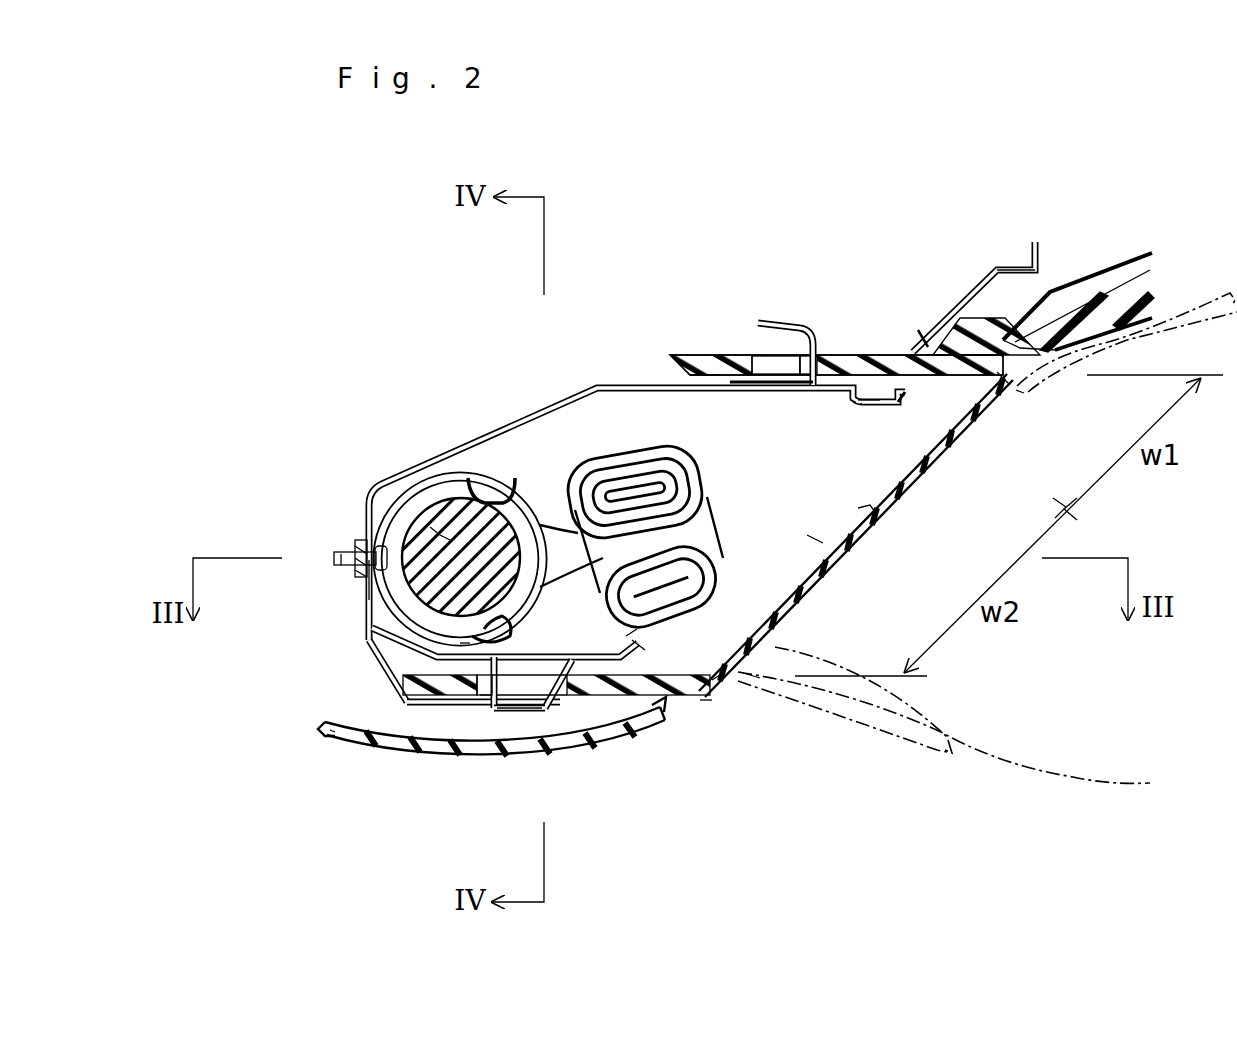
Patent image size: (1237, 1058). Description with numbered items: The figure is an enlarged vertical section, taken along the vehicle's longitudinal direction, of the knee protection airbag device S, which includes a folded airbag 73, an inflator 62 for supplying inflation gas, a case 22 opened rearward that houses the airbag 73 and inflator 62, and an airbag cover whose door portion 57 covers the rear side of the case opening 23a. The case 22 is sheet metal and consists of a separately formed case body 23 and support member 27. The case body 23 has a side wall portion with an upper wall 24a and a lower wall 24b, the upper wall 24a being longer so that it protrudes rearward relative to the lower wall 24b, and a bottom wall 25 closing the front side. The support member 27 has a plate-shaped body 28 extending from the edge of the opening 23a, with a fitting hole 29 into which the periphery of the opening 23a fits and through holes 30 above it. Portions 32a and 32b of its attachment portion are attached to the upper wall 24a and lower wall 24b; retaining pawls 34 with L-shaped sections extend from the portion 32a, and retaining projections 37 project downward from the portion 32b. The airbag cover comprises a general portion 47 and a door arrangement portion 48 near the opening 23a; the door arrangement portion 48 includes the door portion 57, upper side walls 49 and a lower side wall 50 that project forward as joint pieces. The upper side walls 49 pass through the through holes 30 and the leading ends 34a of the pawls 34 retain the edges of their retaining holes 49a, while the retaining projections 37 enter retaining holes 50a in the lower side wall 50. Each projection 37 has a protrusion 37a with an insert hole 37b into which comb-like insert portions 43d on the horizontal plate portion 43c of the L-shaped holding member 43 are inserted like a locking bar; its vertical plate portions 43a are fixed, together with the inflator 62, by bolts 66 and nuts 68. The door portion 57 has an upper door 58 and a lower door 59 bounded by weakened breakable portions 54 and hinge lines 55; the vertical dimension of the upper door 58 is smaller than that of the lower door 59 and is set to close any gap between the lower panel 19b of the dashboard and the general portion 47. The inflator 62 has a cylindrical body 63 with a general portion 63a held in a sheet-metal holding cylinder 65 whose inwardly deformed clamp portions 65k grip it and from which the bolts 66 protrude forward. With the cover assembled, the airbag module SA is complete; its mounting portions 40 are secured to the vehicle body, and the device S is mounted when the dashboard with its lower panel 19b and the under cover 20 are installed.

The knee protection airbag device S is at (354, 298).
The airbag module SA is at (343, 692).
The lower panel 19b is at (1090, 290).
The under cover 20 is at (510, 715).
The case 22 is at (850, 140).
The case body 23 is at (653, 365).
The opening 23a is at (837, 556).
The upper wall 24a is at (632, 386).
The lower wall 24b is at (538, 656).
The bottom wall 25 is at (367, 585).
The support member 27 is at (973, 268).
The body 28 is at (1008, 265).
The fitting hole 29 is at (850, 403).
The through holes 30 is at (890, 380).
The attachment portion toward upper wall 32a is at (885, 392).
The attachment portion toward lower wall 32b is at (457, 710).
The retaining pawls 34 is at (820, 330).
The leading ends 34a is at (773, 323).
The retaining projections 37 is at (505, 722).
The protrusion 37a is at (533, 713).
The insert hole 37b is at (563, 713).
The mounting portions 40 is at (707, 727).
The holding member 43 is at (358, 498).
The vertical plate portions 43a is at (365, 613).
The horizontal plate portion 43c is at (380, 747).
The insert portions 43d is at (567, 715).
The general portion 47 is at (988, 318).
The door arrangement portion 48 is at (732, 690).
The upper side walls 49 is at (695, 357).
The retaining holes 49a is at (760, 363).
The lower side wall 50 is at (633, 708).
The retaining holes 50a is at (473, 710).
The weakened breakable portions 54 is at (868, 505).
The hinge lines 55 is at (990, 383).
The door portion 57 is at (1062, 452).
The upper door 58 is at (875, 522).
The lower door 59 is at (857, 545).
The inflator 62 is at (468, 470).
The inflator body 63 is at (445, 537).
The general portion 63a is at (430, 527).
The holding cylinder 65 is at (547, 523).
The clamp portions 65k is at (490, 497).
The bolts 66 is at (332, 553).
The nuts 68 is at (365, 537).
The folded airbag 73 is at (724, 508).